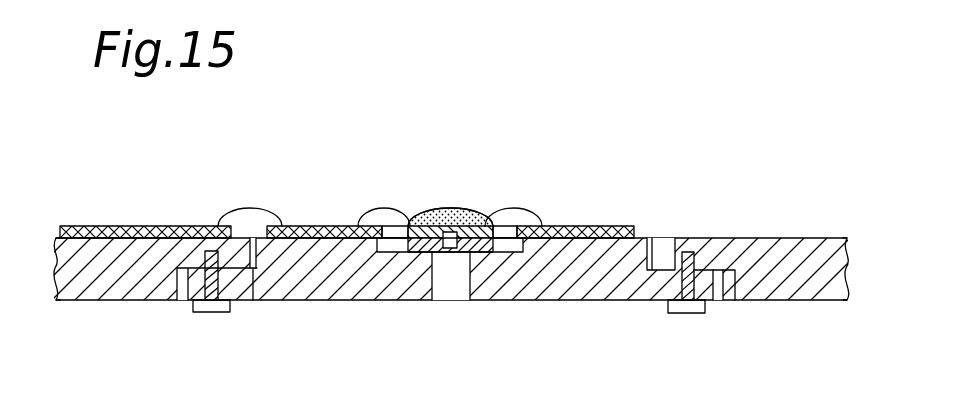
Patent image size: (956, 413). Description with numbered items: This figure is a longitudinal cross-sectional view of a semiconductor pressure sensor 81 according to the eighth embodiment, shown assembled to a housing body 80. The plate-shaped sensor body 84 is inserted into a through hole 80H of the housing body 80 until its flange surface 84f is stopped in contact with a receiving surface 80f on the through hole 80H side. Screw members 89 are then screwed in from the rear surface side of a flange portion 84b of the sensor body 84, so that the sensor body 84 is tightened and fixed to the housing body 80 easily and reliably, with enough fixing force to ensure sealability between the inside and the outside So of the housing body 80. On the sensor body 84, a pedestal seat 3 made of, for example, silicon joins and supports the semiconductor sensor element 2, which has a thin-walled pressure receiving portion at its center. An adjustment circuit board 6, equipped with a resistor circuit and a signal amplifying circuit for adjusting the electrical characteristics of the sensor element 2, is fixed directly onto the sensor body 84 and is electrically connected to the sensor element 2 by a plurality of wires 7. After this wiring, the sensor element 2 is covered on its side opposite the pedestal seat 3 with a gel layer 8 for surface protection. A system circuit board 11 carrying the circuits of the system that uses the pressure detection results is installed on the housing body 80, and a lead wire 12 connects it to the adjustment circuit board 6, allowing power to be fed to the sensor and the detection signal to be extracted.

The housing body 80 is at (112, 302).
The system circuit board 11 is at (97, 226).
The outside of the housing body So is at (187, 205).
The adjustment circuit board 6 is at (330, 226).
The lead wire 12 is at (248, 208).
The semiconductor sensor element 2 is at (433, 214).
The gel layer 8 is at (482, 214).
The wires 7 is at (384, 208).
The pressure sensor 81 is at (578, 214).
The pedestal seat 3 is at (407, 252).
The through hole 80H is at (256, 266).
The flange portion 84b is at (176, 299).
The screw members 89 is at (207, 313).
The receiving surface 80f is at (666, 274).
The sensor body 84 is at (613, 302).
The flange surface 84f is at (705, 268).